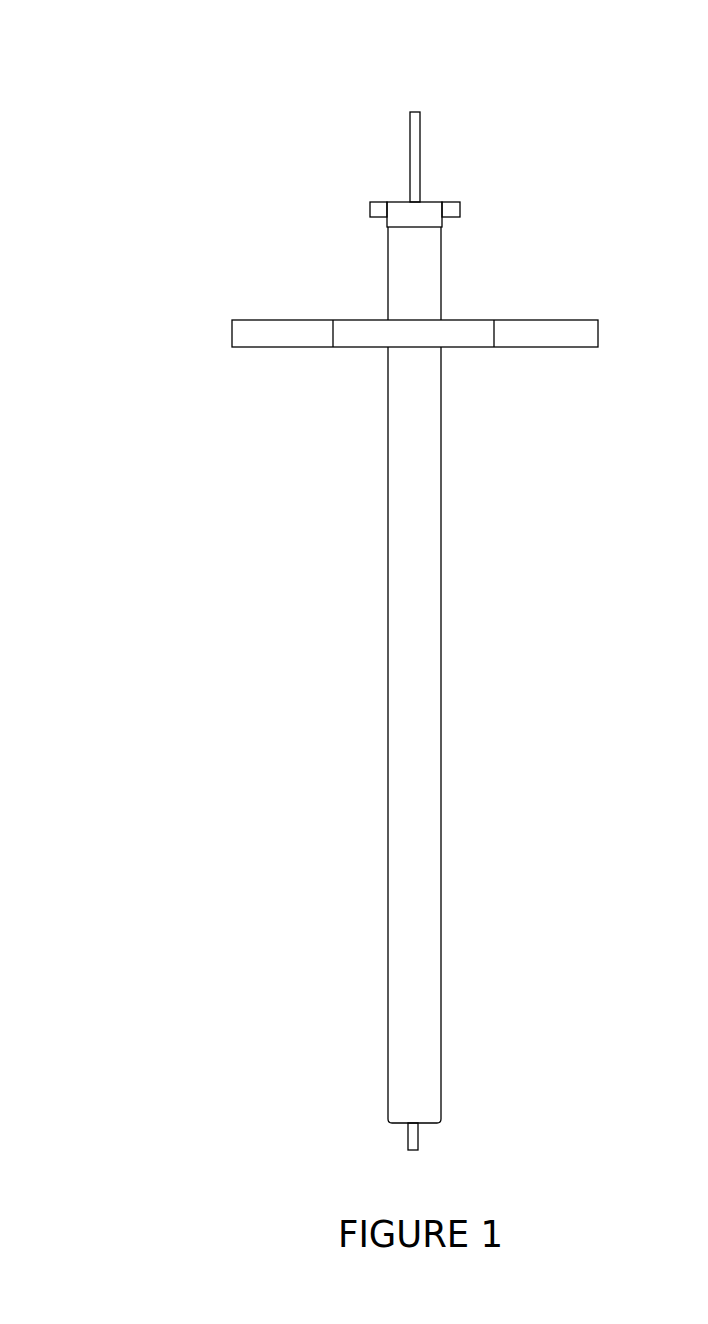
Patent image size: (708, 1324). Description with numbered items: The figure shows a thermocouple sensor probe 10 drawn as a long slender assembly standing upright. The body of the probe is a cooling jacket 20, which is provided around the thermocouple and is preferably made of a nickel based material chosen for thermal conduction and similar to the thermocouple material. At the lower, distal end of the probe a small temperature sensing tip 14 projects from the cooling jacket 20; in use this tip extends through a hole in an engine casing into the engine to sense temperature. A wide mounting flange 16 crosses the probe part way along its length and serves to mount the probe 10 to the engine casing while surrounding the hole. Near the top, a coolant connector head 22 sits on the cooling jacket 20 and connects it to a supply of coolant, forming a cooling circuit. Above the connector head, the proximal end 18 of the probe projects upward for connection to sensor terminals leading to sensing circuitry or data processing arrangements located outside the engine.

The thermocouple sensor probe 10 is at (200, 135).
The temperature sensing tip 14 is at (485, 1111).
The mounting flange 16 is at (434, 421).
The proximal end 18 is at (487, 123).
The cooling jacket 20 is at (481, 675).
The coolant connector head 22 is at (471, 249).